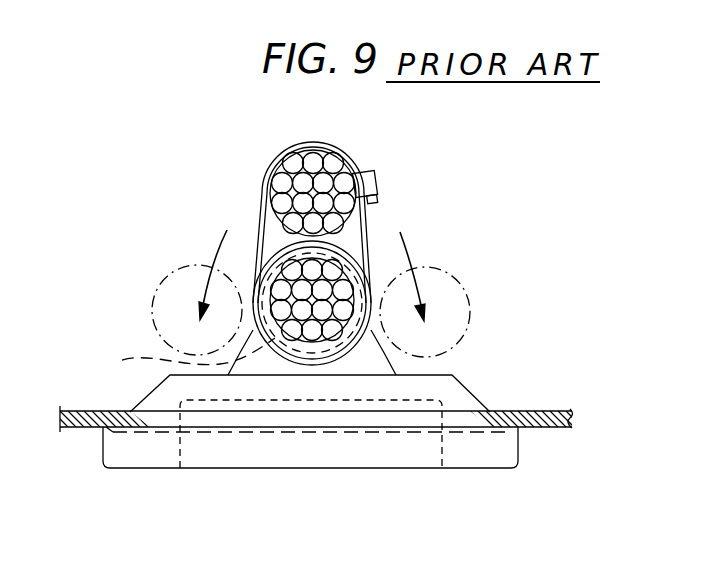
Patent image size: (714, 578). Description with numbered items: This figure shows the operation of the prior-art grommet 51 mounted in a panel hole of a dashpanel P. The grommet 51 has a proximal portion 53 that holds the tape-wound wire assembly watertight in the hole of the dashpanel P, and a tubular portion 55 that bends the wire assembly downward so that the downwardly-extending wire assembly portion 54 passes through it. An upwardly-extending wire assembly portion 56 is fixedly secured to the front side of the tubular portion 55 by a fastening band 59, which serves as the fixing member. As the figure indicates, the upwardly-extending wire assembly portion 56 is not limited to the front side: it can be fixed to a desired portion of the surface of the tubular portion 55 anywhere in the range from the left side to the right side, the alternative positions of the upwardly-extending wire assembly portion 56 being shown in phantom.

The grommet 51 is at (122, 230).
The proximal portion 53 is at (142, 470).
The downwardly-extending wire assembly portion 54 is at (283, 262).
The tubular portion 55 is at (182, 358).
The upwardly-extending wire assembly portion 56 is at (270, 175).
The fastening band 59 is at (377, 222).
The dashpanel P is at (558, 432).